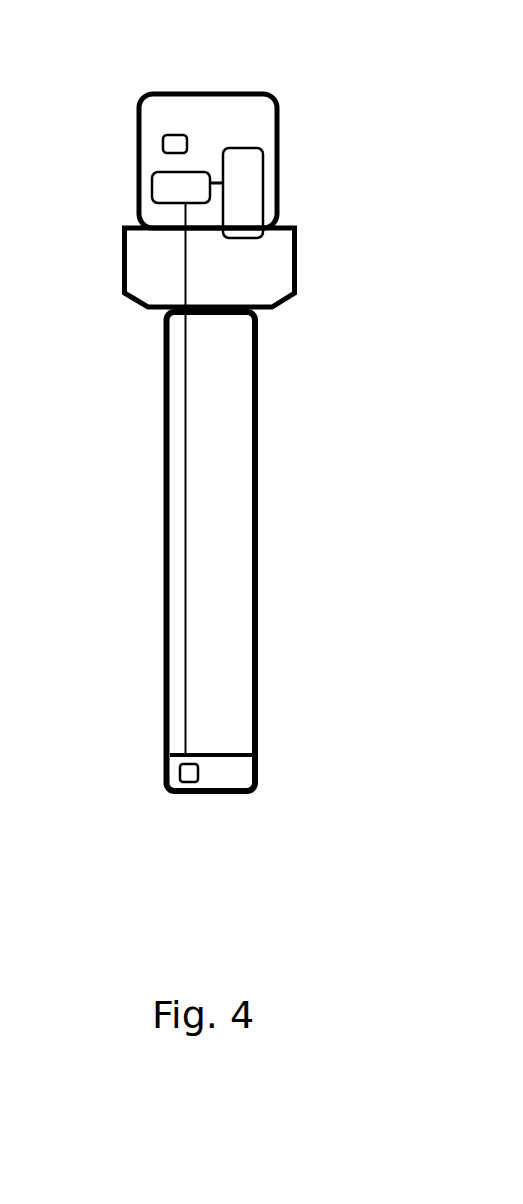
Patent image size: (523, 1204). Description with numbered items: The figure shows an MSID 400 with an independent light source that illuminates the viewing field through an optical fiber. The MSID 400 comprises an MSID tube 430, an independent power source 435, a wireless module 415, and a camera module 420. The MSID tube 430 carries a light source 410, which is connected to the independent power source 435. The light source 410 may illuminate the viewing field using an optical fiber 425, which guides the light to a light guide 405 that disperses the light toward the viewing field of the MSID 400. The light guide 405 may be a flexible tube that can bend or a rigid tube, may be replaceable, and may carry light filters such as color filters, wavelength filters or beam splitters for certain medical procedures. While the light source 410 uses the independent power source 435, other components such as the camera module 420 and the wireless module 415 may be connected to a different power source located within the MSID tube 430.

The MSID 400 is at (137, 92).
The light guide 405 is at (178, 771).
The light source 410 is at (160, 190).
The wireless module 415 is at (163, 144).
The camera module 420 is at (252, 778).
The optical fiber 425 is at (183, 577).
The MSID tube 430 is at (237, 522).
The independent power source 435 is at (264, 166).